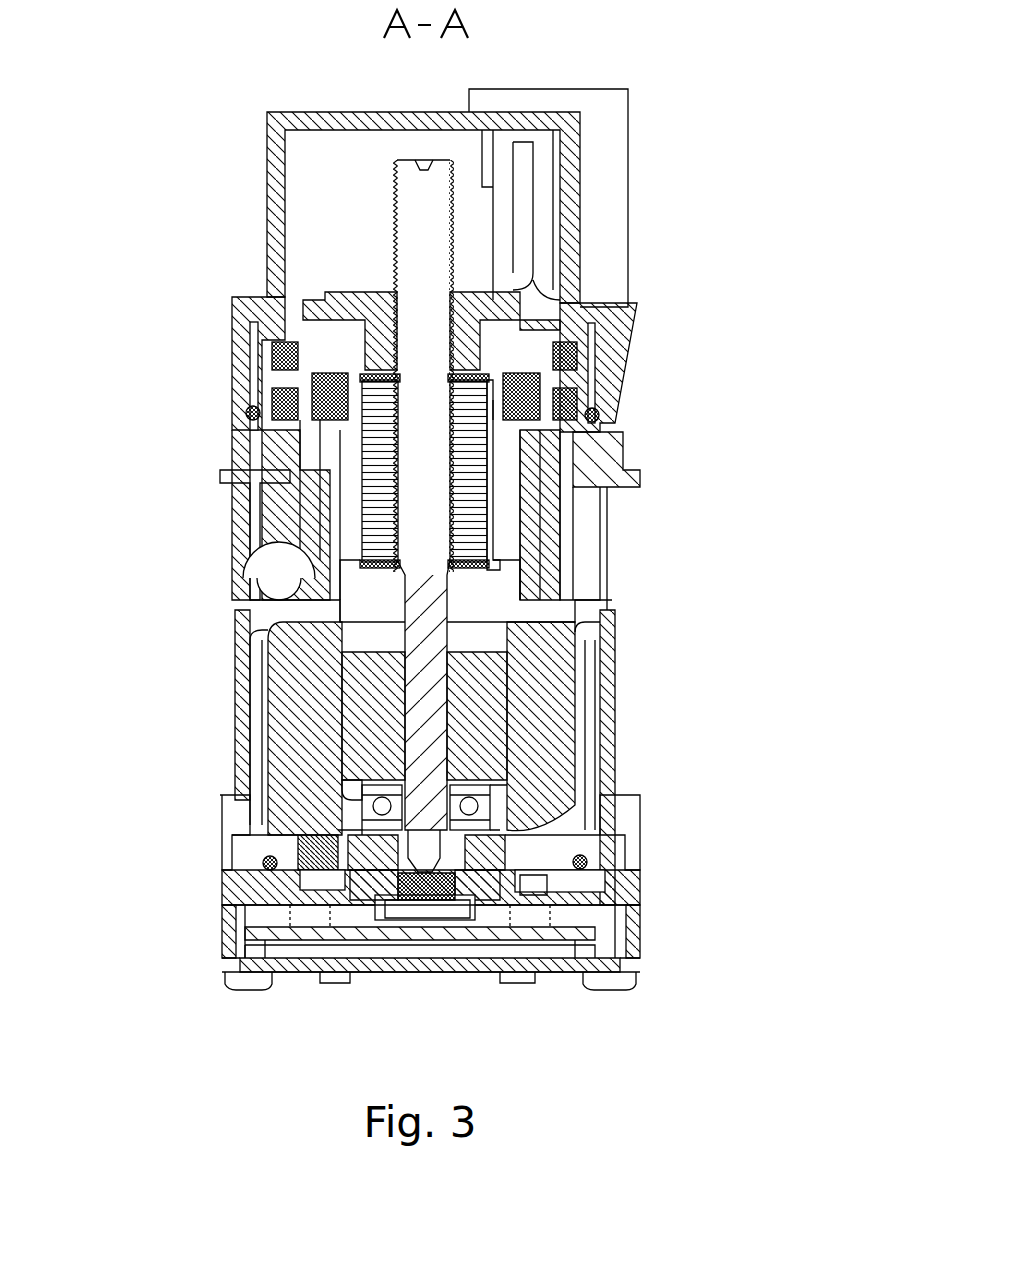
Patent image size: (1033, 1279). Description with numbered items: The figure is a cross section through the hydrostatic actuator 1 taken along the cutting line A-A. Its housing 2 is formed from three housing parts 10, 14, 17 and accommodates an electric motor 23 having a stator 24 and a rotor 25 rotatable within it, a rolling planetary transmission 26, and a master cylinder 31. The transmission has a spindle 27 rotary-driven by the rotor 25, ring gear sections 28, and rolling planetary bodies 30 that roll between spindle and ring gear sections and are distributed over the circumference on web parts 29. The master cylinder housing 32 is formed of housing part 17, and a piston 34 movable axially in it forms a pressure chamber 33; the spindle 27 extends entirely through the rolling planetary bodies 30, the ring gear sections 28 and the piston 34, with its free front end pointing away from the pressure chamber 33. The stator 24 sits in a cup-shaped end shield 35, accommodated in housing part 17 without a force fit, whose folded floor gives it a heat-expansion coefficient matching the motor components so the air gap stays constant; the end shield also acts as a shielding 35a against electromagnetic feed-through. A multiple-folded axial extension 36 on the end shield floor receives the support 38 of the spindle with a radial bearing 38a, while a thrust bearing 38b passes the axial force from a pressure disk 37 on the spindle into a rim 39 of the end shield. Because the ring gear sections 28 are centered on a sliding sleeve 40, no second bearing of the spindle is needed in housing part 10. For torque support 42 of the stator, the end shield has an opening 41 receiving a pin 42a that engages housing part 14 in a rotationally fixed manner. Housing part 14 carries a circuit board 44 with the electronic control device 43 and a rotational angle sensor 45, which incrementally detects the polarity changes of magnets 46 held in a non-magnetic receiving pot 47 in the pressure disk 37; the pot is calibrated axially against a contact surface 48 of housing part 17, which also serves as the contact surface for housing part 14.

The hydrostatic actuator 1 is at (670, 72).
The housing 2 is at (299, 105).
The housing part 10 is at (268, 240).
The housing part 14 is at (603, 910).
The housing part 17 is at (258, 660).
The electric motor 23 is at (582, 745).
The stator 24 is at (293, 800).
The rotor 25 is at (500, 693).
The rolling planetary transmission 26 is at (560, 480).
The spindle 27 is at (432, 622).
The ring gear sections 28 is at (365, 402).
The web parts 29 is at (480, 378).
The rolling planetary bodies 30 is at (365, 452).
The master cylinder 31 is at (572, 443).
The master cylinder housing 32 is at (577, 460).
The pressure chamber 33 is at (290, 470).
The piston 34 is at (300, 490).
The end shield 35 is at (272, 690).
The shielding 35a is at (262, 763).
The multiple-folded axial extension 36 is at (500, 805).
The pressure disk 37 is at (490, 875).
The support 38 is at (507, 828).
The radial bearing 38a is at (487, 793).
The thrust bearing 38b is at (493, 852).
The rim 39 is at (340, 862).
The sliding sleeve 40 is at (497, 537).
The opening 41 is at (300, 840).
The torque support 42 is at (290, 873).
The pin 42a is at (297, 855).
The electronic control device 43 is at (483, 945).
The circuit board 44 is at (402, 935).
The rotational angle sensor 45 is at (435, 910).
The magnets 46 is at (420, 882).
The receiving pot 47 is at (398, 880).
The contact surface 48 is at (258, 867).